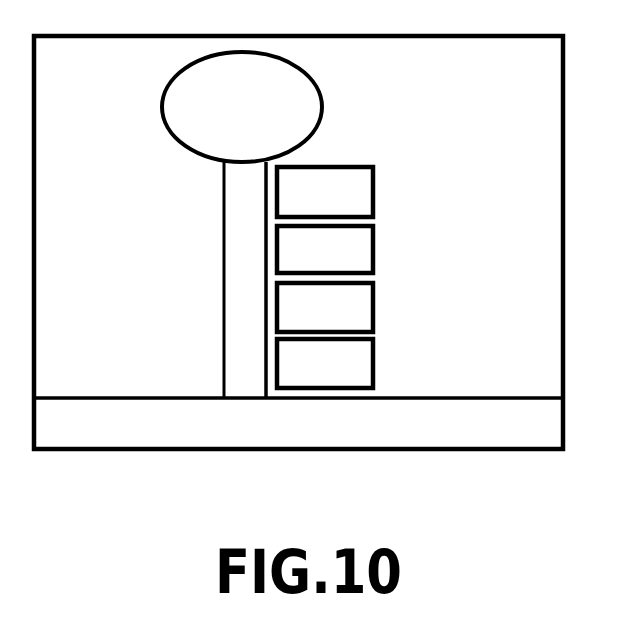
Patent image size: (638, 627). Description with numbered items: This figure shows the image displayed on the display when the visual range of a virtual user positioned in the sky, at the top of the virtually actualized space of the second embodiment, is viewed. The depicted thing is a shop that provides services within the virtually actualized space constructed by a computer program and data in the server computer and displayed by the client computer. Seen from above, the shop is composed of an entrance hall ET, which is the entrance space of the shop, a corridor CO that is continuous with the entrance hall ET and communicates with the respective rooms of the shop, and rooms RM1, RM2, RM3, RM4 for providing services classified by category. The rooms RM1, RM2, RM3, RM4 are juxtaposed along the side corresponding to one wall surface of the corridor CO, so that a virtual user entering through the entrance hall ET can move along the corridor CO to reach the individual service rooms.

The entrance hall ET is at (313, 102).
The corridor CO is at (222, 260).
The room RM1 is at (363, 195).
The room RM2 is at (363, 254).
The room RM3 is at (363, 316).
The room RM4 is at (363, 373).